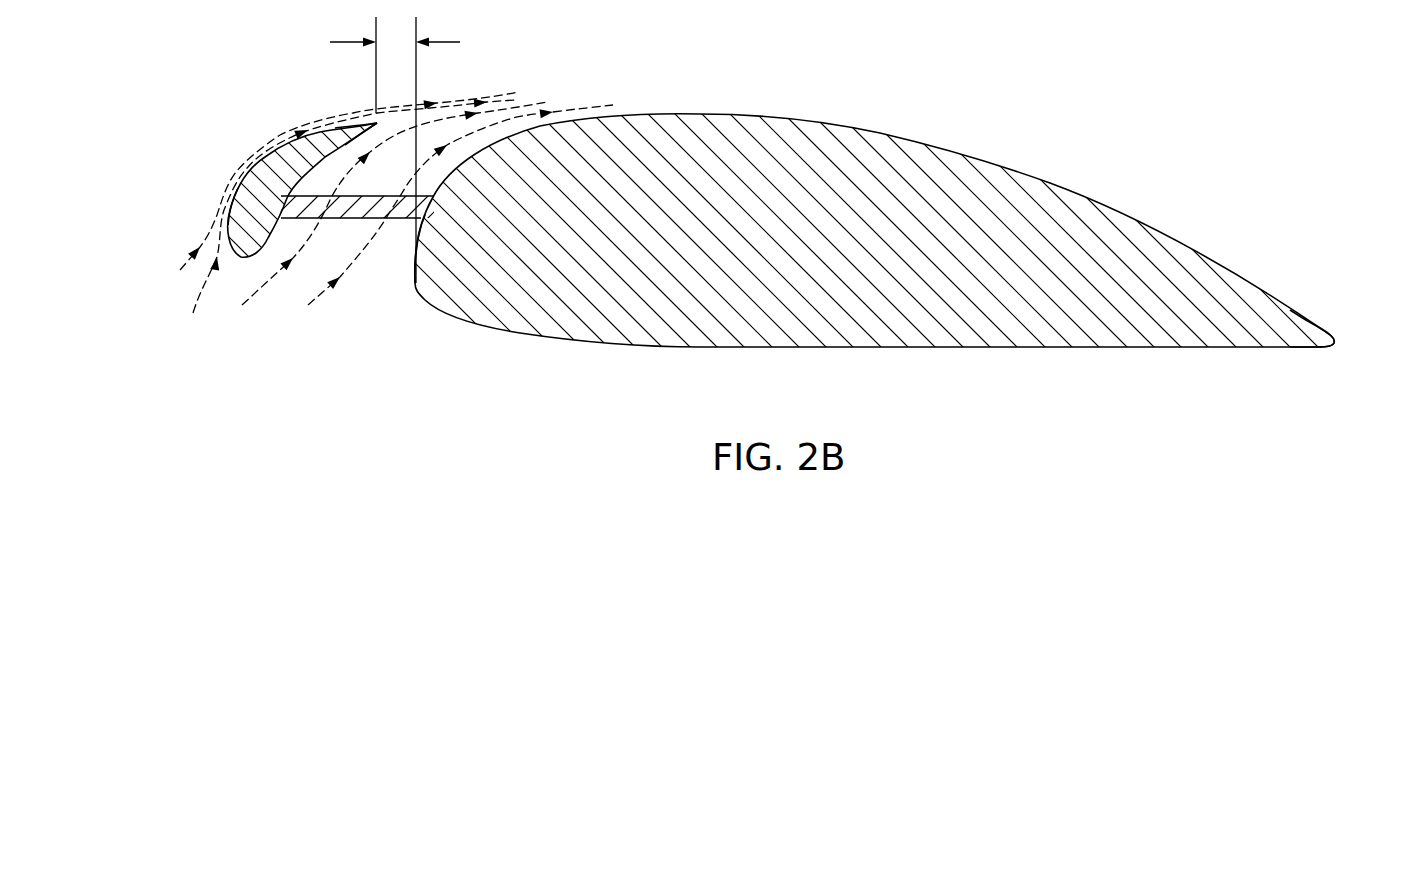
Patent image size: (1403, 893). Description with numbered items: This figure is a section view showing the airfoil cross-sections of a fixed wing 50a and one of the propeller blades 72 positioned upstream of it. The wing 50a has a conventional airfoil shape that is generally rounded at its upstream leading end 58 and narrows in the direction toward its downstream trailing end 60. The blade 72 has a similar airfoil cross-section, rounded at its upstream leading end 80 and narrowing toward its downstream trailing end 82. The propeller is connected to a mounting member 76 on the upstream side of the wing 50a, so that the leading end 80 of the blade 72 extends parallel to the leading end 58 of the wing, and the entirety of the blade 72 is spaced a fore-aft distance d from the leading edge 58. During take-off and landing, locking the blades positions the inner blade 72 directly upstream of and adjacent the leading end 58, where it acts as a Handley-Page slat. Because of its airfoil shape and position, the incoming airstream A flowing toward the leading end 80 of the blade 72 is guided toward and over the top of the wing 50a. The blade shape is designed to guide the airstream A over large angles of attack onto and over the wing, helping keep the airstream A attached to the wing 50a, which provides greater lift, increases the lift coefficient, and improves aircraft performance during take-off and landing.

The fixed wing 50a is at (690, 116).
The leading end 58 is at (417, 278).
The trailing end 60 is at (1337, 340).
The blade 72 is at (245, 237).
The mounting member 76 is at (353, 219).
The leading end 80 is at (232, 204).
The trailing end 82 is at (353, 122).
The fore-aft distance d is at (395, 150).
The airstream A is at (272, 150).